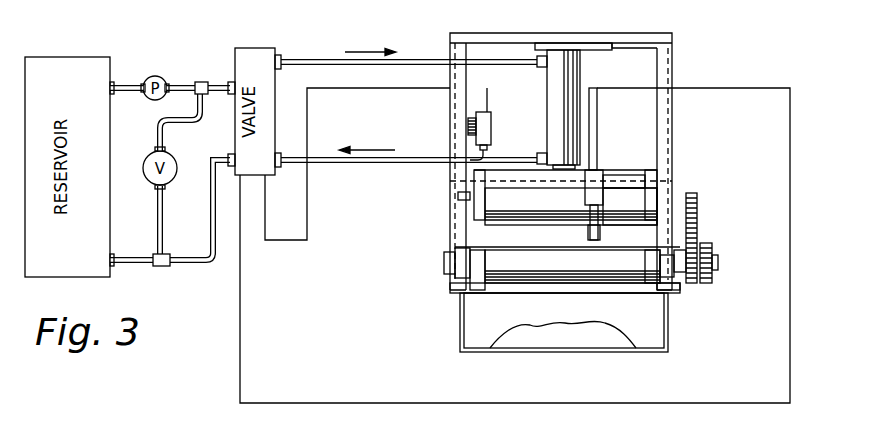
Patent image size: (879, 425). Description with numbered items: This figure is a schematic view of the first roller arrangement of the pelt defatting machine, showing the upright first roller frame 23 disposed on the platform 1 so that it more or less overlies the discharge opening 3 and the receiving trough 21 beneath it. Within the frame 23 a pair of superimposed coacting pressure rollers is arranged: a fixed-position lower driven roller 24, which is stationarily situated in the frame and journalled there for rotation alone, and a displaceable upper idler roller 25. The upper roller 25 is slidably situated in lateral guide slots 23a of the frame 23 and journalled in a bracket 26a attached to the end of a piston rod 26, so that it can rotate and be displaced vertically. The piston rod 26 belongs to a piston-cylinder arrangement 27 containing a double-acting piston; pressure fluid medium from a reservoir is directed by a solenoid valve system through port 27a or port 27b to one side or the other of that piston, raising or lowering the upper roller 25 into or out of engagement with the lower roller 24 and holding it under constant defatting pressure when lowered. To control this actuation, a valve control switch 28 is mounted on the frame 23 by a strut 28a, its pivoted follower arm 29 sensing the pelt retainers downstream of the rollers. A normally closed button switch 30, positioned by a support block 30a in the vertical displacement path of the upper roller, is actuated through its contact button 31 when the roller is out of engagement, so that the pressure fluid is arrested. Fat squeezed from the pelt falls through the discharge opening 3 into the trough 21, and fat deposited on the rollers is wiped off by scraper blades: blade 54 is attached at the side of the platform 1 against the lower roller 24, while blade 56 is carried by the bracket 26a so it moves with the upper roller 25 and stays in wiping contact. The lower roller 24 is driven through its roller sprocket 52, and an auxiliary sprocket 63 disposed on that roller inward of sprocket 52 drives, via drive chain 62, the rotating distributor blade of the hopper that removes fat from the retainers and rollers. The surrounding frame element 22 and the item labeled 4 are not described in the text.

The platform 1 is at (452, 285).
The discharge opening 3 is at (483, 297).
The roller bearing 4 is at (472, 252).
The receiving trough 21 is at (460, 342).
The enclosure frame 22 is at (757, 0).
The first roller frame 23 is at (673, 60).
The lateral guide slots 23a is at (670, 154).
The lower driven roller 24 is at (693, 231).
The upper idler roller 25 is at (626, 200).
The piston rod 26 is at (574, 162).
The bracket 26a is at (626, 168).
The piston-cylinder arrangement 27 is at (568, 75).
The port 27a is at (538, 57).
The port 27b is at (540, 153).
The valve control switch 28 is at (593, 172).
The strut 28a is at (462, 184).
The pivoted follower arm 29 is at (648, 213).
The button switch 30 is at (487, 125).
The support block 30a is at (471, 128).
The contact button 31 is at (478, 152).
The roller sprocket 52 is at (716, 266).
The fat-scraper blade 54 is at (662, 300).
The fat-scraper blade 56 is at (619, 169).
The drive chain 62 is at (696, 242).
The auxiliary sprocket 63 is at (712, 251).